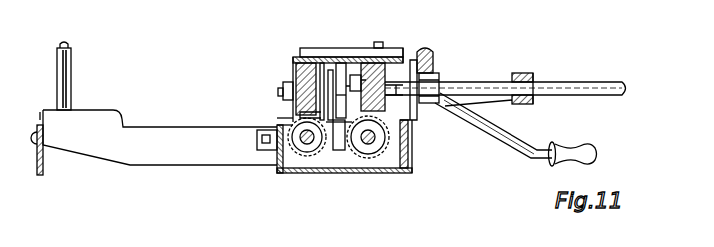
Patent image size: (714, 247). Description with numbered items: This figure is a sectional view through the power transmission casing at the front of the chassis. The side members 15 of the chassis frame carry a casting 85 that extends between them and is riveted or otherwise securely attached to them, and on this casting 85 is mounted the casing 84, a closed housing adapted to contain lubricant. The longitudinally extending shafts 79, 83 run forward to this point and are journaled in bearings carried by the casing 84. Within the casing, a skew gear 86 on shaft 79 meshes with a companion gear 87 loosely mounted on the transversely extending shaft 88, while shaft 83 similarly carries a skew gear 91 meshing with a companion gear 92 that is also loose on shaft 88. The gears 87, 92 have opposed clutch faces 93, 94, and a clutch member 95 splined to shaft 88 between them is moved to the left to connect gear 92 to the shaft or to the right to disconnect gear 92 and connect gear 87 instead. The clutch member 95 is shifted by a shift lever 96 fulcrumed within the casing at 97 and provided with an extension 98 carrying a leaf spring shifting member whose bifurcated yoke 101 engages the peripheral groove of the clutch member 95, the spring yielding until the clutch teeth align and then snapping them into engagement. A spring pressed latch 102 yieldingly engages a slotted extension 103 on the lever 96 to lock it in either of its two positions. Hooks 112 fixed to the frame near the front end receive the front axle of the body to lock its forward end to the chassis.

The side members of the chassis frame 15 is at (45, 170).
The shaft 79 is at (368, 153).
The shaft 83 is at (308, 152).
The casing 84 is at (393, 165).
The casting 85 is at (173, 135).
The skew gear 86 is at (396, 135).
The companion gear 87 is at (374, 74).
The transversely extending shaft 88 is at (577, 83).
The skew gear 91 is at (279, 165).
The companion gear 92 is at (291, 70).
The clutch face 93 is at (355, 78).
The clutch face 94 is at (318, 80).
The clutch member 95 is at (283, 96).
The shift lever 96 is at (533, 148).
The fulcrum 97 is at (290, 116).
The extension 98 is at (338, 150).
The bifurcated yoke 101 is at (300, 109).
The spring pressed latch 102 is at (433, 56).
The slotted extension 103 is at (437, 75).
The hooks 112 is at (72, 63).